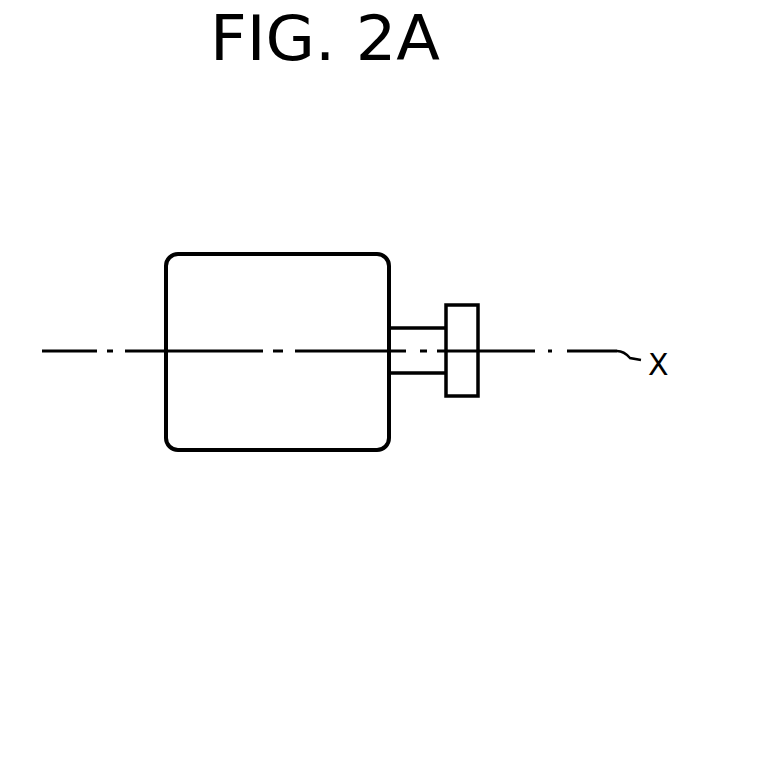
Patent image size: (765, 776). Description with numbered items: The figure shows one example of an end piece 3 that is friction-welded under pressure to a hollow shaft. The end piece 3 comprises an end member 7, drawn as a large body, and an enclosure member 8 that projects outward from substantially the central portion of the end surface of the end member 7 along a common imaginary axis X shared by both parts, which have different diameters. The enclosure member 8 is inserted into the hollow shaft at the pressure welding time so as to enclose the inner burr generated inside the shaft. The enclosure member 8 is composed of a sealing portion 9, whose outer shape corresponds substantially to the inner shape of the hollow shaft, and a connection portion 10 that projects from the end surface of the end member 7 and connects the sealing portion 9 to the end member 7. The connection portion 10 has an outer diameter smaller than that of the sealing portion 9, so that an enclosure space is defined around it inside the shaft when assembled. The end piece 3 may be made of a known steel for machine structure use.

The end piece 3 is at (277, 330).
The end member 7 is at (281, 444).
The enclosure member 8 is at (433, 345).
The sealing portion 9 is at (457, 320).
The connection portion 10 is at (411, 336).